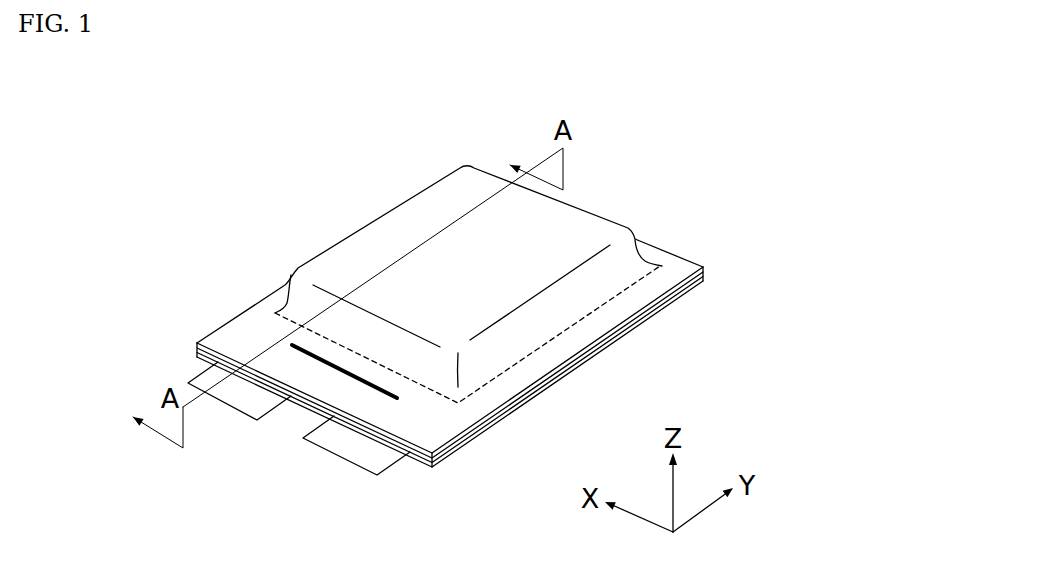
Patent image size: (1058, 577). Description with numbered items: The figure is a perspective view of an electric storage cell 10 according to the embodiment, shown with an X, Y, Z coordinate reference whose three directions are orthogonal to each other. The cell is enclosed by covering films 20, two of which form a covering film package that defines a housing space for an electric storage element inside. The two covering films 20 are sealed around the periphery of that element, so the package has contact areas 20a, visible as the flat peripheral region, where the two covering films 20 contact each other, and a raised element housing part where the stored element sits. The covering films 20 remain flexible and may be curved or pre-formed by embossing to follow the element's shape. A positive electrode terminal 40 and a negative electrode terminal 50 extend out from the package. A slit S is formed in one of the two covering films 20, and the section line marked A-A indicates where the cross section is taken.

The electric storage cell 10 is at (445, 281).
The covering film 20 is at (397, 225).
The contact area 20a is at (587, 330).
The positive electrode terminal 40 is at (237, 392).
The negative electrode terminal 50 is at (353, 445).
The slit S is at (387, 398).